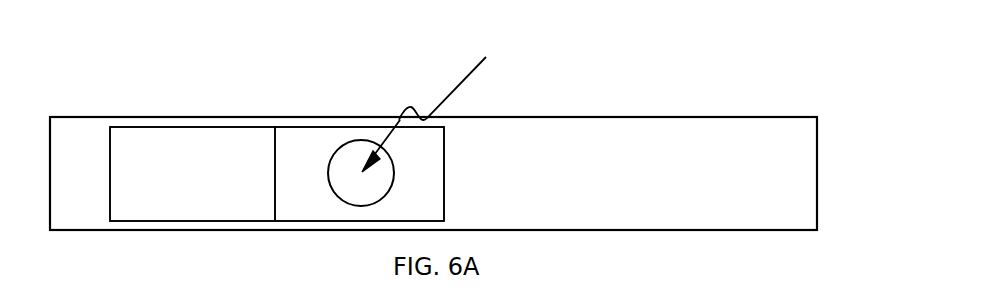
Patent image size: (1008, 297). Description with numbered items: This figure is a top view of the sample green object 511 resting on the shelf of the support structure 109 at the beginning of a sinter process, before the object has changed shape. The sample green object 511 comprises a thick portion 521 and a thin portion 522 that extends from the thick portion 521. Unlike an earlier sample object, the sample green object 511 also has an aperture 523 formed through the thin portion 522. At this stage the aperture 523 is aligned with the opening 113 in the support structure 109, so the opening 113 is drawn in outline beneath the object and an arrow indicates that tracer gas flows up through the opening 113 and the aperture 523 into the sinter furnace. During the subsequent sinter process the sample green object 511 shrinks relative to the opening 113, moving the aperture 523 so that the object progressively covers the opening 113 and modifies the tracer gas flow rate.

The support structure 109 is at (800, 148).
The sample green object 511 is at (121, 124).
The thick portion 521 is at (192, 174).
The thin portion 522 is at (359, 174).
The aperture 523 is at (343, 143).
The opening 113 is at (440, 99).